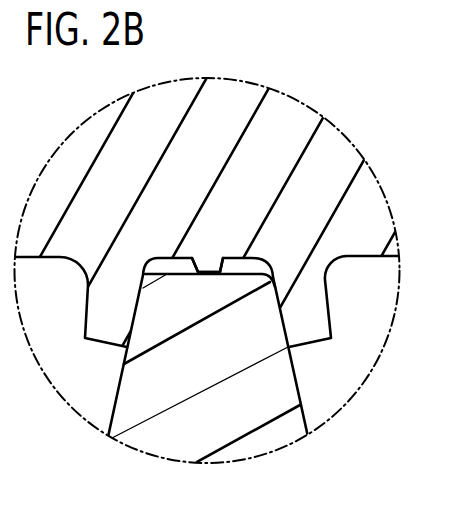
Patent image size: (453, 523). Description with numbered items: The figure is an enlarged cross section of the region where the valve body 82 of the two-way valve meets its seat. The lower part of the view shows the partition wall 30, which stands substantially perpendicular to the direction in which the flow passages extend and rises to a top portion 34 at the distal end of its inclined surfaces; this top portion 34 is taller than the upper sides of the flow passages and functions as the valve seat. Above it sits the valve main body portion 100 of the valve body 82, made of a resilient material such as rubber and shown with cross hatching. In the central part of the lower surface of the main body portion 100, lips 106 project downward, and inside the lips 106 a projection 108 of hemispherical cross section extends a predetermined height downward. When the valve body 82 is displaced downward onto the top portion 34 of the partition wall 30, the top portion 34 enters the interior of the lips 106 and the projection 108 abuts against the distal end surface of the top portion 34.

The partition wall 30 is at (247, 455).
The top portion 34 is at (278, 392).
The valve body 82 is at (301, 100).
The valve main body portion 100 is at (105, 173).
The lips 106 is at (317, 322).
The projection 108 is at (211, 263).